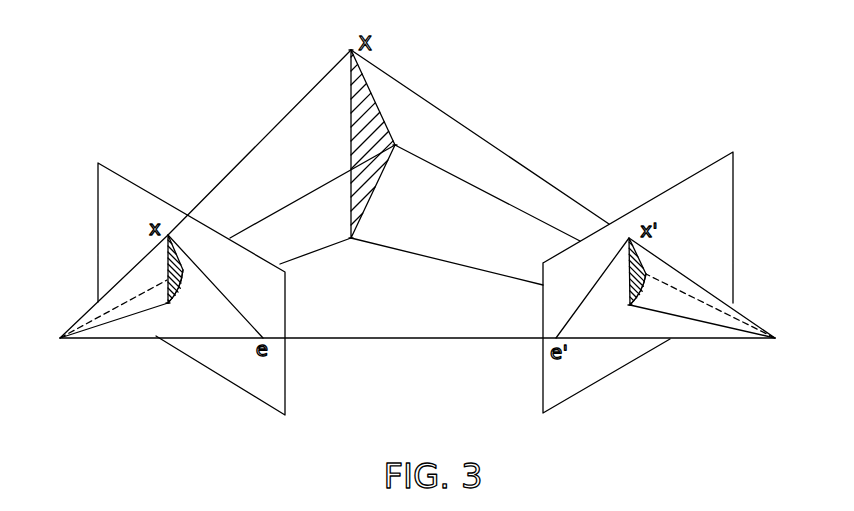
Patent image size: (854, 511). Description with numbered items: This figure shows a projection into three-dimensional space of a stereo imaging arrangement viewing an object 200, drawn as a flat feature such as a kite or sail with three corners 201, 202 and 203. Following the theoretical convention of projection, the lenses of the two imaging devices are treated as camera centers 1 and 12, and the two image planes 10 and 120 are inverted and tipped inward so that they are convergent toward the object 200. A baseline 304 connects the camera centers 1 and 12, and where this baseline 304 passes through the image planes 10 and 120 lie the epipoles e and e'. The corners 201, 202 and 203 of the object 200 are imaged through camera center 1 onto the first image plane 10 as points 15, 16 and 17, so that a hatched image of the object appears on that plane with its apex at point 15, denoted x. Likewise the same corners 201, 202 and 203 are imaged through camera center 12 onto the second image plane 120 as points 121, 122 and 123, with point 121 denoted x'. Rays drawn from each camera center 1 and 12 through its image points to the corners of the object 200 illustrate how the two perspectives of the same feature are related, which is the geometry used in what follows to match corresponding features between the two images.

The camera center 1 is at (58, 338).
The image plane 10 is at (113, 188).
The point 15 is at (168, 234).
The point 16 is at (168, 303).
The point 17 is at (183, 270).
The object 200 is at (362, 108).
The corner 201 is at (349, 48).
The corner 202 is at (351, 240).
The corner 203 is at (396, 140).
The baseline 304 is at (440, 338).
The image plane 120 is at (717, 193).
The point 121 is at (628, 236).
The point 122 is at (630, 306).
The point 123 is at (648, 272).
The camera center 12 is at (777, 338).